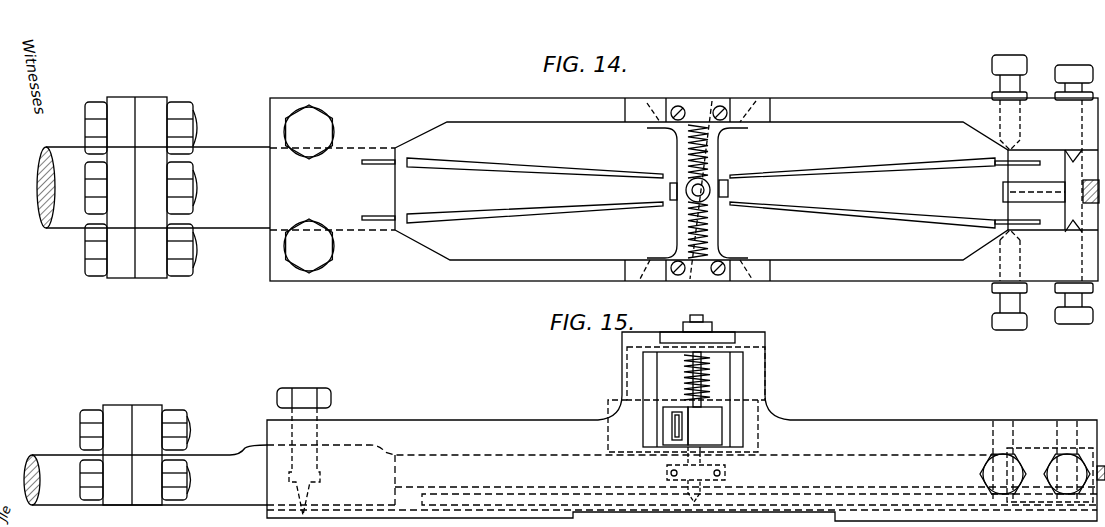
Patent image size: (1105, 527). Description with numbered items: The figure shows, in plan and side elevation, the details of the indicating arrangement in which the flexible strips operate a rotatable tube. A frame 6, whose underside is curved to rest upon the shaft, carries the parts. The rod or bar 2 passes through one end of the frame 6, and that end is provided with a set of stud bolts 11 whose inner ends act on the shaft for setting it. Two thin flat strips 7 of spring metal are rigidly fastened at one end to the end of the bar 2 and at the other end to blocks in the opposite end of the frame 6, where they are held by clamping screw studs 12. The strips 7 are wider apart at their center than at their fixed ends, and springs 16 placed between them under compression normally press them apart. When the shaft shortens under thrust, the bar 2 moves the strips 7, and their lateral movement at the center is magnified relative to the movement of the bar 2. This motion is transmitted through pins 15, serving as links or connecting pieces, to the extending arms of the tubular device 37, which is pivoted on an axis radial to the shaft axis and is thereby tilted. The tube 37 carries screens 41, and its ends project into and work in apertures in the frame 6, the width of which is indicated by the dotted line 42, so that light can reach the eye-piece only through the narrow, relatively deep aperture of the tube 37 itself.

In FIG. 14, the rod or bar 2 is at (153, 187).
In FIG. 15, the rod or bar 2 is at (145, 455).
In FIG. 14, the frame 6 is at (363, 98).
In FIG. 15, the frame 6 is at (405, 420).
In FIG. 14, the strips 7 is at (515, 167).
In FIG. 14, the stud bolts 11 is at (300, 125).
In FIG. 15, the stud bolts 11 is at (287, 396).
In FIG. 14, the holding or clamping screw studs 12 is at (1020, 66).
In FIG. 15, the holding or clamping screw studs 12 is at (1067, 466).
In FIG. 14, the pins 15 is at (712, 190).
In FIG. 14, the springs 16 is at (688, 150).
In FIG. 15, the tubular device 37 is at (705, 428).
In FIG. 14, the screens 41 is at (745, 150).
In FIG. 14, the dotted line 42 is at (660, 100).